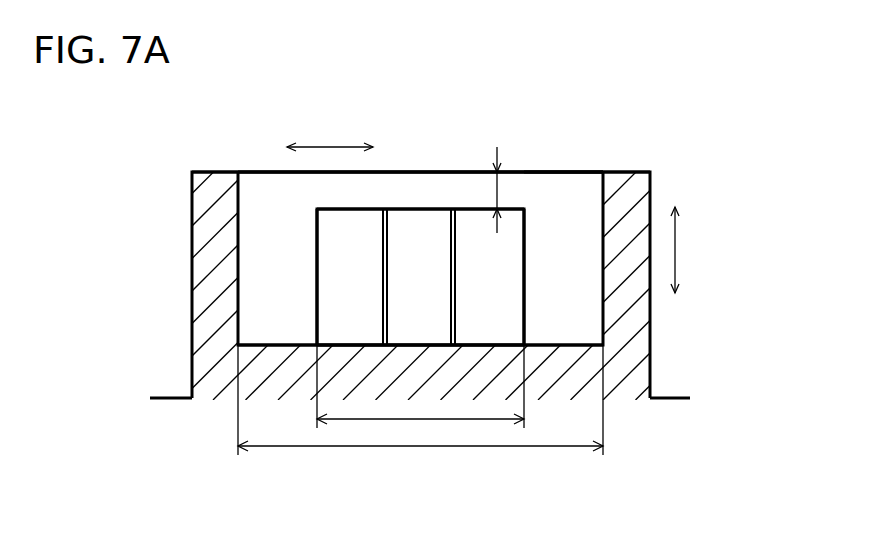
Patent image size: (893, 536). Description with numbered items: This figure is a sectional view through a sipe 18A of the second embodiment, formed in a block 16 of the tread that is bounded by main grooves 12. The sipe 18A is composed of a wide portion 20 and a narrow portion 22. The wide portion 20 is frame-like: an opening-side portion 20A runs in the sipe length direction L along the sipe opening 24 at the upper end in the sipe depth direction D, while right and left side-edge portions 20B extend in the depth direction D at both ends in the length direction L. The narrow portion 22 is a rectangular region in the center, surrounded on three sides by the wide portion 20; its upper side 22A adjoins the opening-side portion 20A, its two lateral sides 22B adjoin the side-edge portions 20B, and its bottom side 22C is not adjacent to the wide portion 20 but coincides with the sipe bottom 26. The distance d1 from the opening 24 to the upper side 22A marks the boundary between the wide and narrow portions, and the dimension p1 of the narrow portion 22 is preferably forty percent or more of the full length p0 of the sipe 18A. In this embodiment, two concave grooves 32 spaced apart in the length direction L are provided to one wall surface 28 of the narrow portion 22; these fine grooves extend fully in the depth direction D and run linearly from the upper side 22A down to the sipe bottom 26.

The main groove 12 is at (172, 393).
The block 16 is at (635, 188).
The sipe 18A is at (250, 172).
The wide portion 20 is at (538, 195).
The opening-side portion 20A is at (442, 190).
The side-edge portion 20B is at (262, 252).
The narrow portion 22 is at (325, 225).
The upper side 22A is at (413, 206).
The lateral side 22B is at (314, 242).
The bottom side 22C is at (350, 342).
The sipe opening 24 is at (580, 172).
The sipe bottom 26 is at (563, 334).
The wall surface 28 is at (487, 312).
The concave groove 32 is at (390, 266).
The full length of the sipe p0 is at (415, 447).
The dimension of the narrow portion p1 is at (415, 422).
The distance from the opening to the upper side d1 is at (508, 187).
The sipe depth direction D is at (687, 250).
The sipe length direction L is at (330, 132).